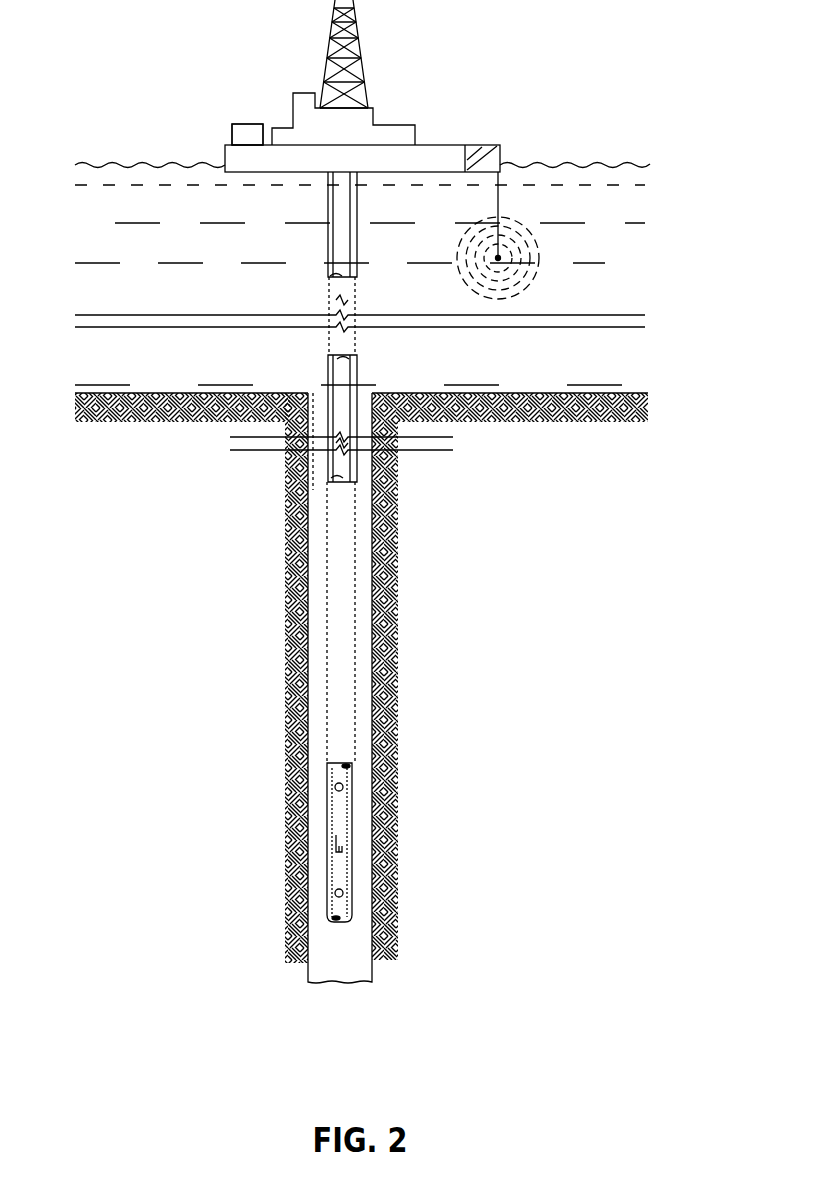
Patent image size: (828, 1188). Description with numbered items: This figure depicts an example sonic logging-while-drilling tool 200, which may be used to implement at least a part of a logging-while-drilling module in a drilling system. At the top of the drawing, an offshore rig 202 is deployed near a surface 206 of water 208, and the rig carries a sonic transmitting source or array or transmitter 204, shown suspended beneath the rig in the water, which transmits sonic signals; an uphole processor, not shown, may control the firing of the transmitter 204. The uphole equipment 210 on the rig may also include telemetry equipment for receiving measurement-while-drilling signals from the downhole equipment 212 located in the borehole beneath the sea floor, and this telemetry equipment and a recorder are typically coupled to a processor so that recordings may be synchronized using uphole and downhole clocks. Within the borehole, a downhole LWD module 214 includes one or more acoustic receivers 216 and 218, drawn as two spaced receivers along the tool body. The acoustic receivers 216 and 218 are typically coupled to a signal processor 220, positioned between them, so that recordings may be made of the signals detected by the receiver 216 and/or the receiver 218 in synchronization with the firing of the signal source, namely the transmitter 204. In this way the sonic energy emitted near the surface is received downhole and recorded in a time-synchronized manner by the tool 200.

The sonic logging-while-drilling tool 200 is at (380, 745).
The offshore rig 202 is at (423, 107).
The sonic transmitting source 204 is at (498, 258).
The surface 206 is at (628, 168).
The water 208 is at (540, 177).
The uphole equipment 210 is at (271, 100).
The downhole equipment 212 is at (291, 745).
The downhole LWD module 214 is at (357, 845).
The acoustic receiver 216 is at (335, 787).
The acoustic receiver 218 is at (330, 893).
The signal processor 220 is at (333, 845).